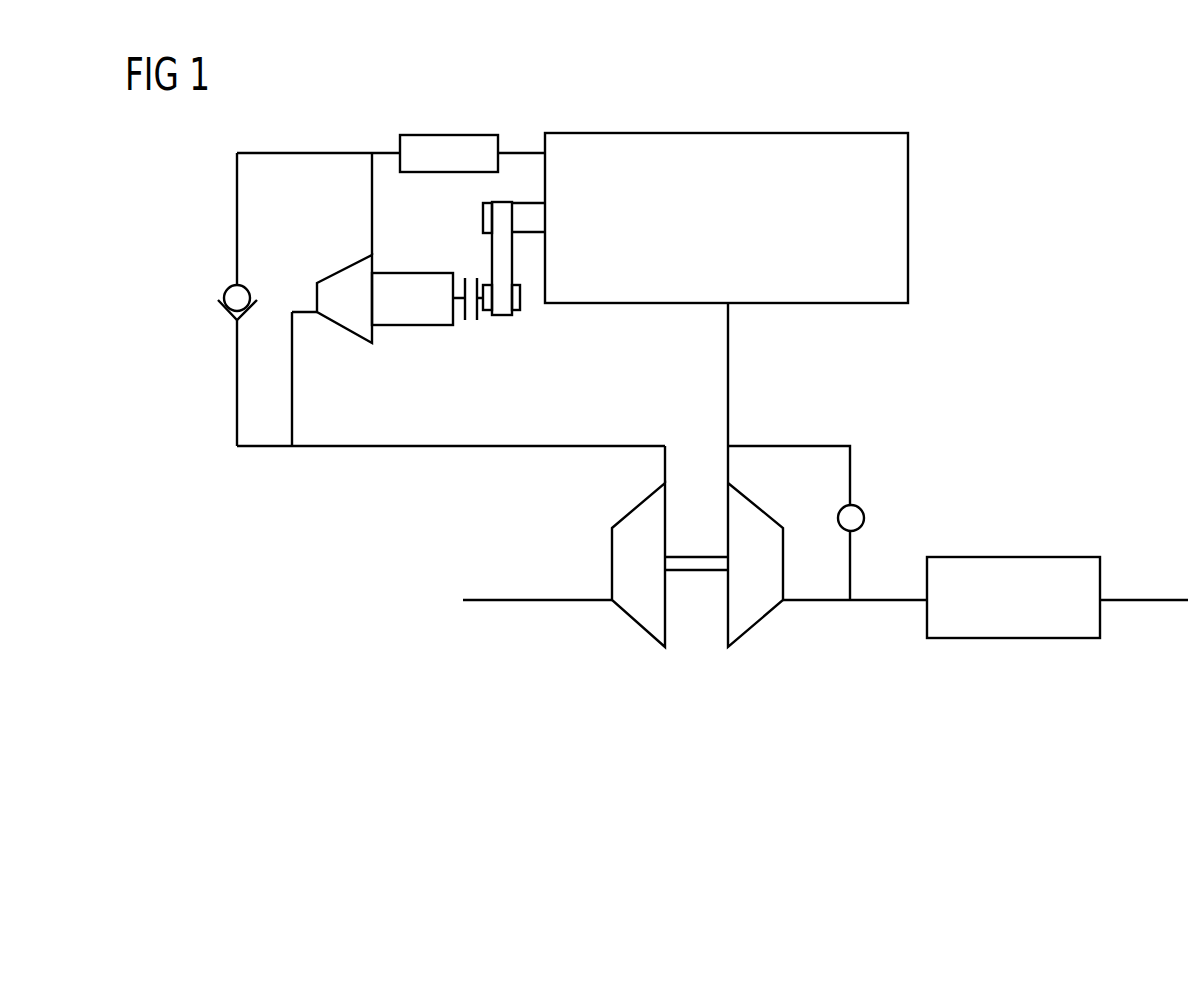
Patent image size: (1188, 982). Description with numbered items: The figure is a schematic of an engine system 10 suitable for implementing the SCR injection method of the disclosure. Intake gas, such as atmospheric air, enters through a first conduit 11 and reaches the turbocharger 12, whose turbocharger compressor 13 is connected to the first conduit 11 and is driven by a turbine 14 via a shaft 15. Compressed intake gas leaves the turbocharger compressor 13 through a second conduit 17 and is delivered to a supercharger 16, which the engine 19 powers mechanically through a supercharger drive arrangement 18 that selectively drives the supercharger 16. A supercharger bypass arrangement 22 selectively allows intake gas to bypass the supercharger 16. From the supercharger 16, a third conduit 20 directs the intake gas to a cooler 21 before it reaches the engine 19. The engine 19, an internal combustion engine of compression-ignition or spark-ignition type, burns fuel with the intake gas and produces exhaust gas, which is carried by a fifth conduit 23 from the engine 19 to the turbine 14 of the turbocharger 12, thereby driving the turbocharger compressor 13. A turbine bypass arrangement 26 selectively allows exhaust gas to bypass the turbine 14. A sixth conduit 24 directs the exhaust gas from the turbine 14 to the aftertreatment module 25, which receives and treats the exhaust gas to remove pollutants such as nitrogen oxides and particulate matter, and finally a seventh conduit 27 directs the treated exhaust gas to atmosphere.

The engine system 10 is at (1110, 349).
The first conduit 11 is at (500, 603).
The turbocharger 12 is at (701, 599).
The turbocharger compressor 13 is at (632, 620).
The turbine 14 is at (763, 615).
The shaft 15 is at (698, 573).
The supercharger 16 is at (344, 333).
The second conduit 17 is at (613, 444).
The supercharger drive arrangement 18 is at (502, 334).
The engine 19 is at (848, 132).
The third conduit 20 is at (520, 150).
The cooler 21 is at (448, 132).
The supercharger bypass arrangement 22 is at (207, 252).
The fifth conduit 23 is at (730, 355).
The sixth conduit 24 is at (893, 603).
The aftertreatment module 25 is at (1022, 553).
The turbine bypass arrangement 26 is at (874, 459).
The seventh conduit 27 is at (1137, 593).